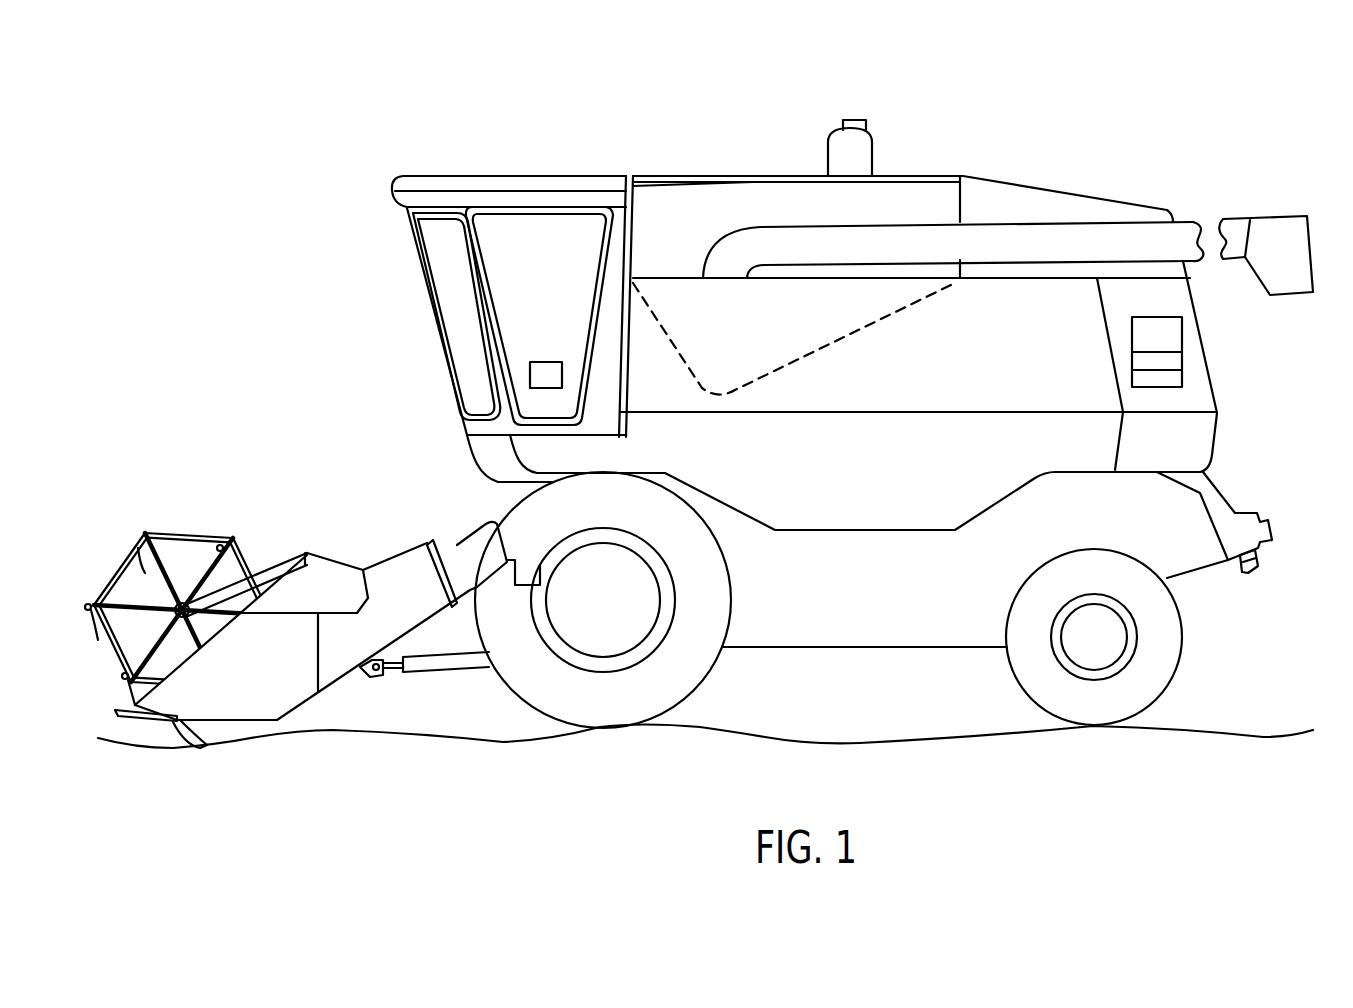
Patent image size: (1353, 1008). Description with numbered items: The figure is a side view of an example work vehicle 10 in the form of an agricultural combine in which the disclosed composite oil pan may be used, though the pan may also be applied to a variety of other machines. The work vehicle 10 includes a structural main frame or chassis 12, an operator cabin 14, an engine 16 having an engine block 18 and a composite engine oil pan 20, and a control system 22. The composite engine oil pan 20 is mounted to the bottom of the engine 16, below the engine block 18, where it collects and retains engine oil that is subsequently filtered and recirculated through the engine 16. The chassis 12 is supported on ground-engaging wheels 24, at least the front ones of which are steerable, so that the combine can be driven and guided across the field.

The work vehicle 10 is at (1200, 168).
The chassis 12 is at (908, 648).
The operator cabin 14 is at (499, 175).
The engine 16 is at (1190, 337).
The engine block 18 is at (1185, 358).
The composite engine oil pan 20 is at (1185, 378).
The control system 22 is at (547, 362).
The ground-engaging wheels 24 is at (575, 655).